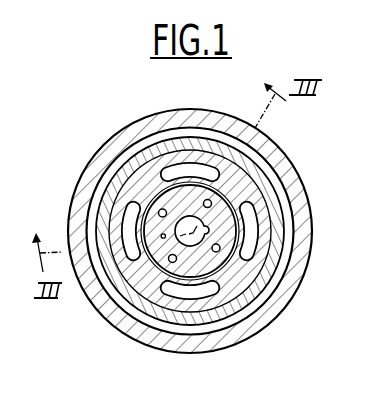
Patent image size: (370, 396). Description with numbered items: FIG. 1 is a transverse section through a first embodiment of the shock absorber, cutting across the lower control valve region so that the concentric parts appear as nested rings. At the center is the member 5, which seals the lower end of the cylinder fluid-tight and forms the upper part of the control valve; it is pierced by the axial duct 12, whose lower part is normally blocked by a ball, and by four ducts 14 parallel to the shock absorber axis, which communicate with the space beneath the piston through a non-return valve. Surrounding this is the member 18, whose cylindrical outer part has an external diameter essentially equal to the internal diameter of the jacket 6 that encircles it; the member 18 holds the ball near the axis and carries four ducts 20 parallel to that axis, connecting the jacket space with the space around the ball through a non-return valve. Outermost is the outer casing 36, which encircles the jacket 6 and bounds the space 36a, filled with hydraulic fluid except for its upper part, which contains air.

The member 5 is at (212, 265).
The jacket 6 is at (210, 317).
The axial duct 12 is at (207, 229).
The ducts 14 is at (209, 200).
The member 18 is at (141, 278).
The ducts 20 is at (198, 170).
The outer casing 36 is at (280, 300).
The space 36a is at (165, 133).